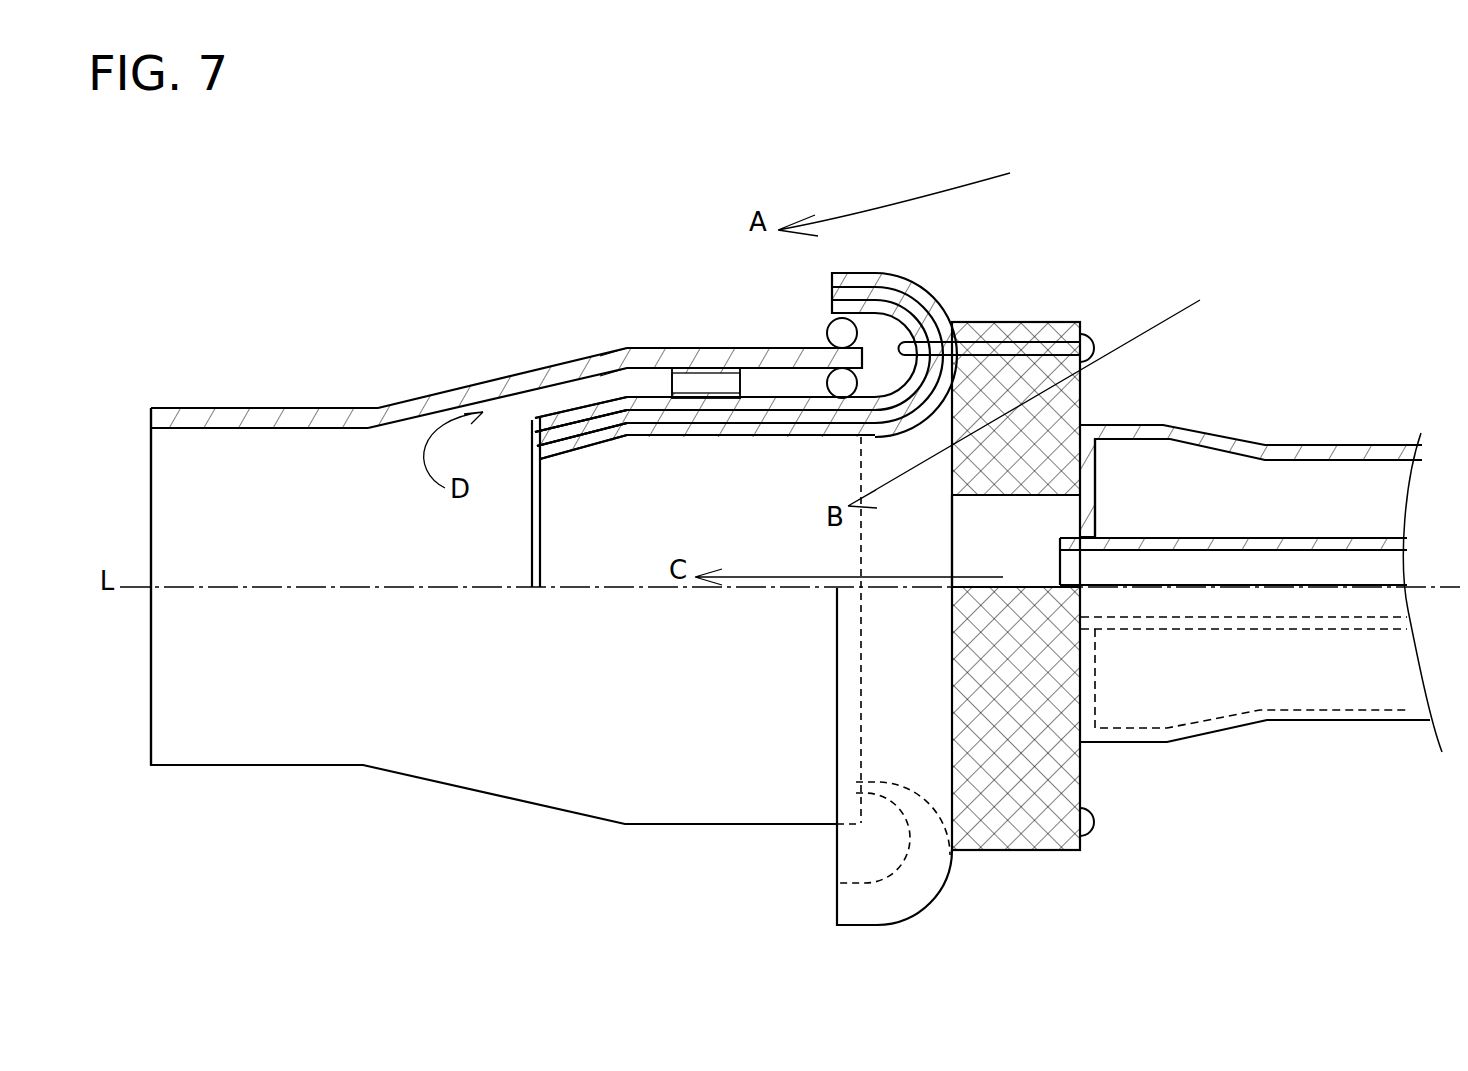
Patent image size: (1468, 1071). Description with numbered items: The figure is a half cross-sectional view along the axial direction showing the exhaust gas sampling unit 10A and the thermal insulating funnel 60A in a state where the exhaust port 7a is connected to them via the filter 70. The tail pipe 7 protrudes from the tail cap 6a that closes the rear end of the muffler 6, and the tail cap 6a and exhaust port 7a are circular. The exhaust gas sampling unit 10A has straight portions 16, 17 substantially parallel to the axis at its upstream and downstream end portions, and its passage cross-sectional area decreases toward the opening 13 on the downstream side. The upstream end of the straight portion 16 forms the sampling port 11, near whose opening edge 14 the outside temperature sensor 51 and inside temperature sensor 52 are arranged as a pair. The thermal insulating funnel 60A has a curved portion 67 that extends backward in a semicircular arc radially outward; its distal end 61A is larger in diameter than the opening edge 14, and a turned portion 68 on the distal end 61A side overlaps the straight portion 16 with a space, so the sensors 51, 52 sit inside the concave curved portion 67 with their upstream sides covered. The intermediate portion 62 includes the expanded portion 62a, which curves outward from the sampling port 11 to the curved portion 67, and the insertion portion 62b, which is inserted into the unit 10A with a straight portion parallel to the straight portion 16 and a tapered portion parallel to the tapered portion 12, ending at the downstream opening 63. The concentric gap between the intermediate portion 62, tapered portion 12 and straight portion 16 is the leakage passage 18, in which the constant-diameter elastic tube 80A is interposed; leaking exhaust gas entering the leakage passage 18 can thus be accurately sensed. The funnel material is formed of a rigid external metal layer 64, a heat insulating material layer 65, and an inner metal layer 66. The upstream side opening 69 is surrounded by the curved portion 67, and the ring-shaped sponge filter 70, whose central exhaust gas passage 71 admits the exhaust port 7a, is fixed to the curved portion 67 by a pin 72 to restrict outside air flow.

The exhaust gas sampling unit 10A is at (275, 378).
The sampling port 11 is at (952, 853).
The tapered portion 12 is at (498, 380).
The opening 13 is at (150, 520).
The opening edge 14 is at (868, 362).
The straight portion 16 is at (653, 348).
The straight portion 17 is at (195, 406).
The leakage passage 18 is at (633, 380).
The outside temperature sensor 51 is at (828, 328).
The inside temperature sensor 52 is at (830, 383).
The thermal insulating funnel 60A is at (942, 272).
The distal end 61A is at (830, 275).
The intermediate portion 62 is at (835, 487).
The expanded portion 62a is at (860, 440).
The insertion portion 62b is at (700, 437).
The downstream opening 63 is at (532, 527).
The external metal layer 64 is at (532, 433).
The heat insulating material layer 65 is at (534, 462).
The inner metal layer 66 is at (543, 482).
The curved portion 67 is at (955, 340).
The turned portion 68 is at (857, 278).
The upstream side opening 69 is at (935, 518).
The filter 70 is at (1083, 313).
The exhaust gas passage 71 is at (1018, 497).
The pin 72 is at (1020, 320).
The elastic tube 80A is at (705, 372).
The muffler 6 is at (1370, 445).
The tail cap 6a is at (1095, 468).
The tail pipe 7 is at (1388, 535).
The exhaust port 7a is at (1060, 568).